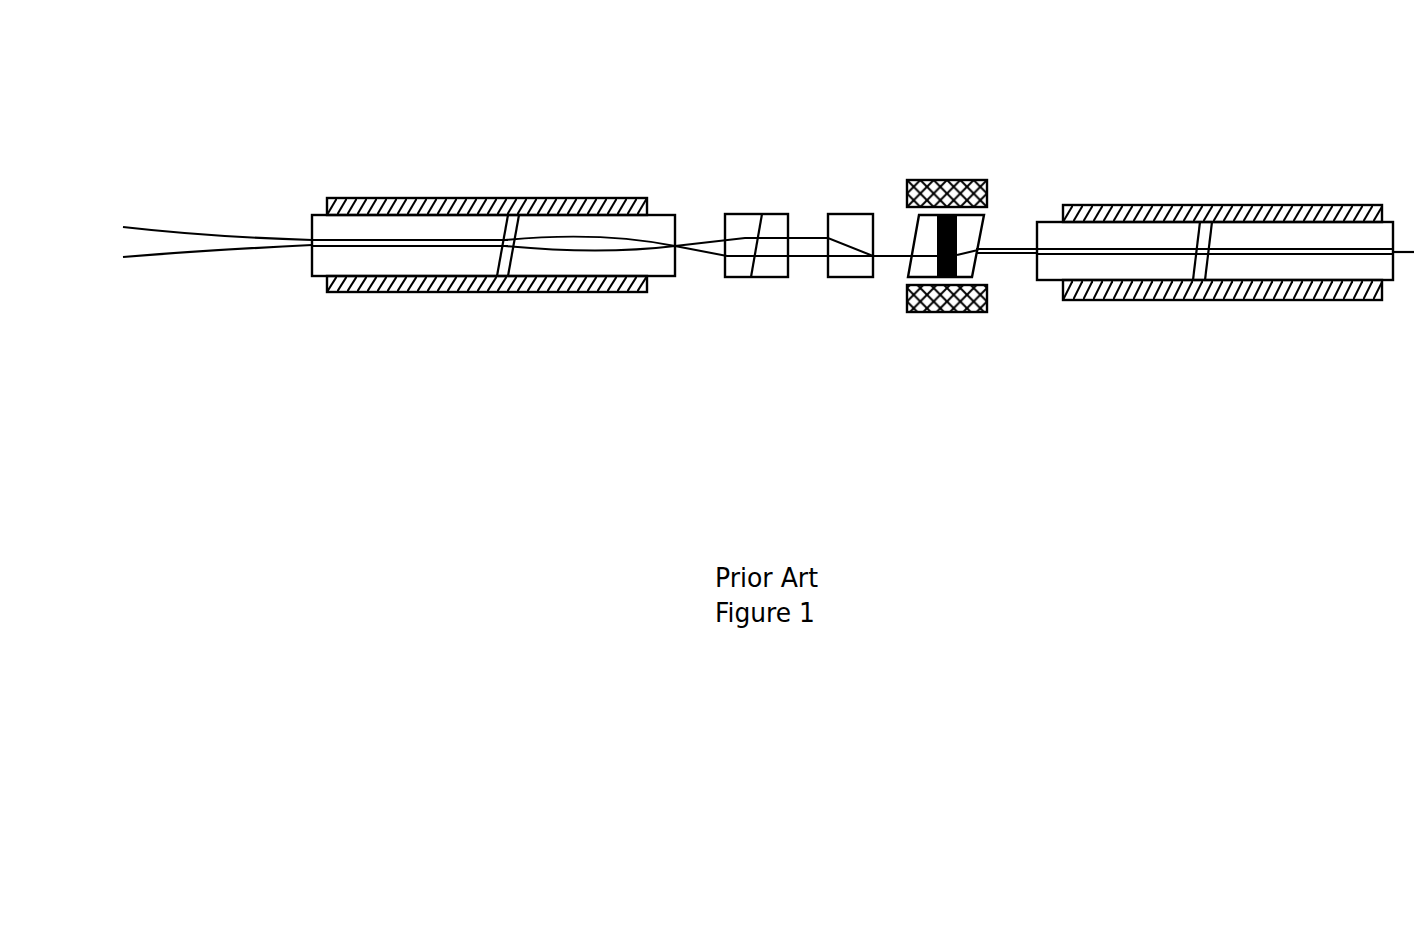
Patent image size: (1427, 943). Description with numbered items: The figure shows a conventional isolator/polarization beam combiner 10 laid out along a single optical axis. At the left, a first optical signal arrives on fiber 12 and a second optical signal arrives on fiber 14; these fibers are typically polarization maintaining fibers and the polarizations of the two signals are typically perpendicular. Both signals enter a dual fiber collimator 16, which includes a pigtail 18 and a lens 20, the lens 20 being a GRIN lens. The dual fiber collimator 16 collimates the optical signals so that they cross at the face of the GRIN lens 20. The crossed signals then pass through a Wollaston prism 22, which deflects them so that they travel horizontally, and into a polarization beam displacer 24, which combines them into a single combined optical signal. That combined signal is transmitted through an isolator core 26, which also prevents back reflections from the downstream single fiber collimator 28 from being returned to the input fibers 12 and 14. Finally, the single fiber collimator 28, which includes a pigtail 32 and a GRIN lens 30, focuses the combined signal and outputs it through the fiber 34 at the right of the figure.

The isolator/polarization beam combiner 10 is at (745, 48).
The fiber 12 is at (198, 232).
The fiber 14 is at (203, 248).
The dual fiber collimator 16 is at (365, 197).
The pigtail 18 is at (313, 277).
The lens 20 is at (675, 215).
The Wollaston prism 22 is at (747, 277).
The polarization beam displacer 24 is at (852, 277).
The isolator core 26 is at (933, 180).
The single fiber collimator 28 is at (1343, 206).
The lens 30 is at (1040, 282).
The pigtail 32 is at (1395, 222).
The fiber 34 is at (1412, 256).